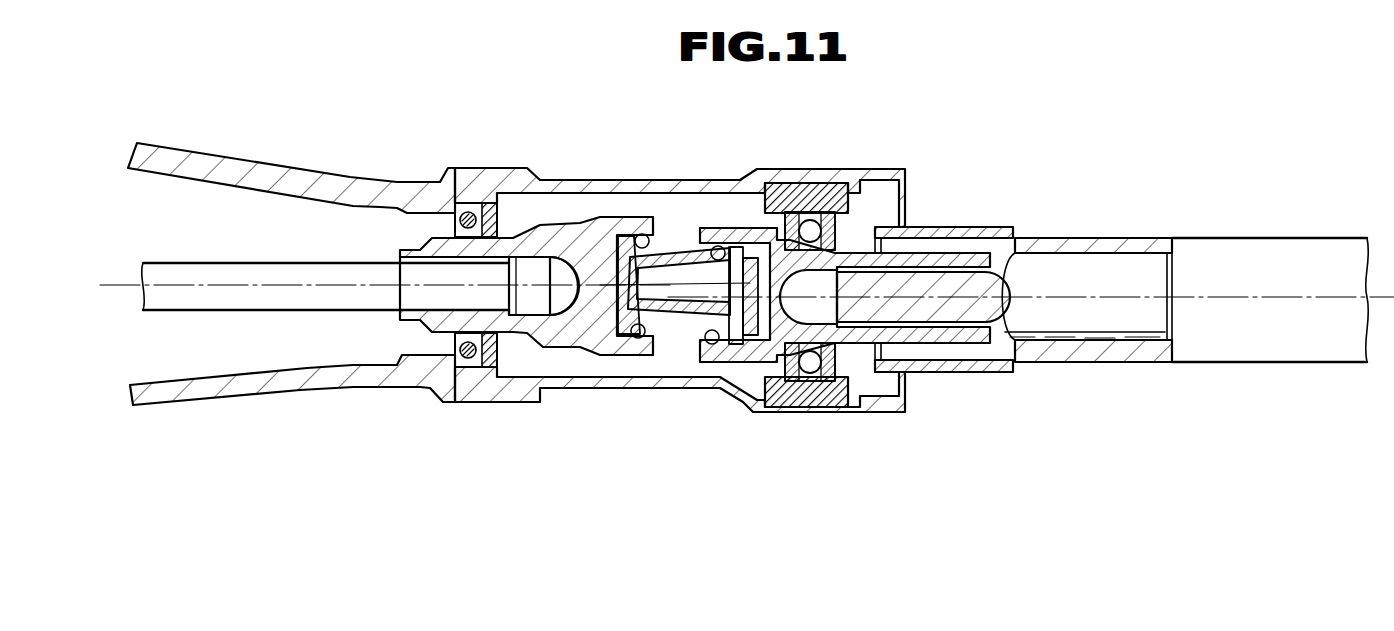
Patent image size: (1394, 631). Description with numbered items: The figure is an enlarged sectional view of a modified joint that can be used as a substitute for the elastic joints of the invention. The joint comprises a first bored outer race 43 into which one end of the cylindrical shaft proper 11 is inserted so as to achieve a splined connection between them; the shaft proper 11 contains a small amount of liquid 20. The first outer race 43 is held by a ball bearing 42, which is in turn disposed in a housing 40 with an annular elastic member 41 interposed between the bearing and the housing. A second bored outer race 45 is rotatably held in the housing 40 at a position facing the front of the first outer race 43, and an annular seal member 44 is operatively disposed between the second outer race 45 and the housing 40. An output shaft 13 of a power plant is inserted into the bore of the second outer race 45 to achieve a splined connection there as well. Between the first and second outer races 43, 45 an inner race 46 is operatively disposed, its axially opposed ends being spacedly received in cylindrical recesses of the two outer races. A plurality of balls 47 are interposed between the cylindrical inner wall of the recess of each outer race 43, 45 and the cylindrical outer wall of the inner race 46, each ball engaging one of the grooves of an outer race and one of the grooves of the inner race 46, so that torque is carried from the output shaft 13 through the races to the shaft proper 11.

The output shaft 13 is at (258, 263).
The annular seal member 44 is at (467, 230).
The second bored outer race 45 is at (580, 230).
The balls 47 is at (712, 250).
The housing 40 is at (710, 180).
The annular elastic member 41 is at (806, 193).
The ball bearing 42 is at (800, 397).
The first bored outer race 43 is at (927, 372).
The inner race 46 is at (683, 313).
The liquid 20 is at (1110, 343).
The cylindrical shaft proper 11 is at (1243, 247).